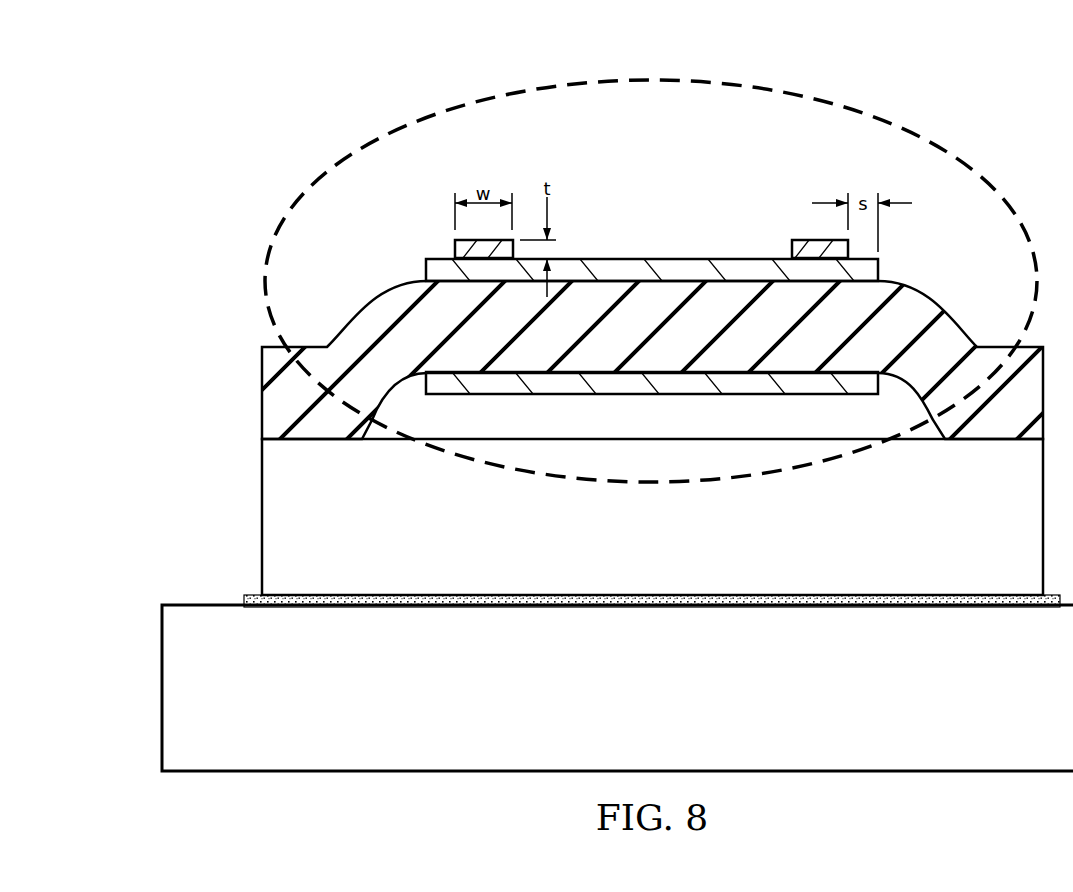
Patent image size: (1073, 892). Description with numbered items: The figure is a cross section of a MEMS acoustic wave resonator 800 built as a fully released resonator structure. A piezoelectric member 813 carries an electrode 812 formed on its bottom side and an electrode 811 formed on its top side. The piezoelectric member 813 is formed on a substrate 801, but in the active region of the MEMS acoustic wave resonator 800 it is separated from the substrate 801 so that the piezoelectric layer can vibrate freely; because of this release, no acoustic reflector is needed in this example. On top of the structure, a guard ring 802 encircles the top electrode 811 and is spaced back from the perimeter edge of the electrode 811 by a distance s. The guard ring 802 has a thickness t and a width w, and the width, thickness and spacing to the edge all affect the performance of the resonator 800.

The MEMS acoustic wave resonator 800 is at (511, 93).
The substrate 801 is at (272, 520).
The guard ring 802 is at (464, 248).
The electrode 811 is at (436, 268).
The electrode 812 is at (742, 382).
The piezoelectric member 813 is at (272, 415).